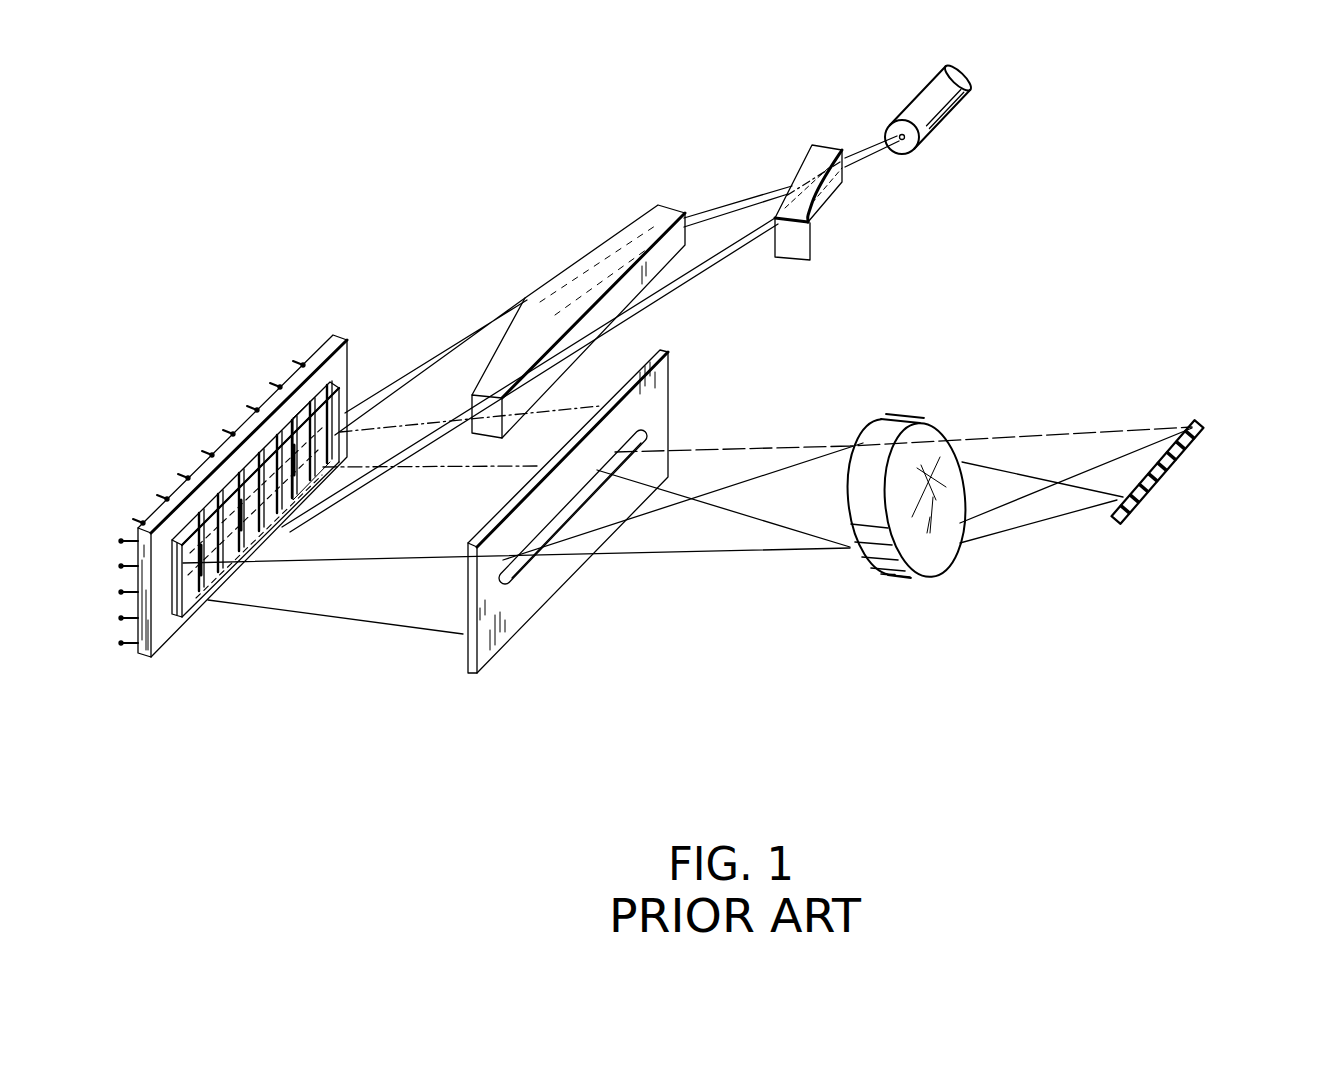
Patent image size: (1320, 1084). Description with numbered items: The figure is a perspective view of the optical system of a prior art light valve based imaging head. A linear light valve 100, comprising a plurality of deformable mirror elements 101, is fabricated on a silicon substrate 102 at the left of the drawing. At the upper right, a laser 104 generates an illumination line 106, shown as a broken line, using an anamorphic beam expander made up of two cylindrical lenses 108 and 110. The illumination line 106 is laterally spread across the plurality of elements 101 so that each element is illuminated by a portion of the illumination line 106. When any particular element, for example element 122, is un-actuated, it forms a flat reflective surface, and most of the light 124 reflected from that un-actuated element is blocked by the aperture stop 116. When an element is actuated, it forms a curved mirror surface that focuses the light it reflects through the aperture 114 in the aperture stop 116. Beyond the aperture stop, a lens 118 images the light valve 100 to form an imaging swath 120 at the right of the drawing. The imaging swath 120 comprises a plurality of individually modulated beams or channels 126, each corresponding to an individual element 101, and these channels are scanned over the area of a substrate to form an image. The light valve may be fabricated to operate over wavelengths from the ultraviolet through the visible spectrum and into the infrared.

The linear light valve 100 is at (217, 408).
The deformable mirror elements 101 is at (221, 505).
The silicon substrate 102 is at (329, 337).
The laser 104 is at (920, 92).
The illumination line 106 is at (337, 401).
The cylindrical lens 108 is at (808, 144).
The cylindrical lens 110 is at (634, 221).
The aperture 114 is at (518, 573).
The aperture stop 116 is at (669, 405).
The lens 118 is at (879, 435).
The imaging swath 120 is at (1188, 471).
The element 122 is at (187, 600).
The light 124 is at (317, 620).
The individually modulated beams or channels 126 is at (1148, 478).